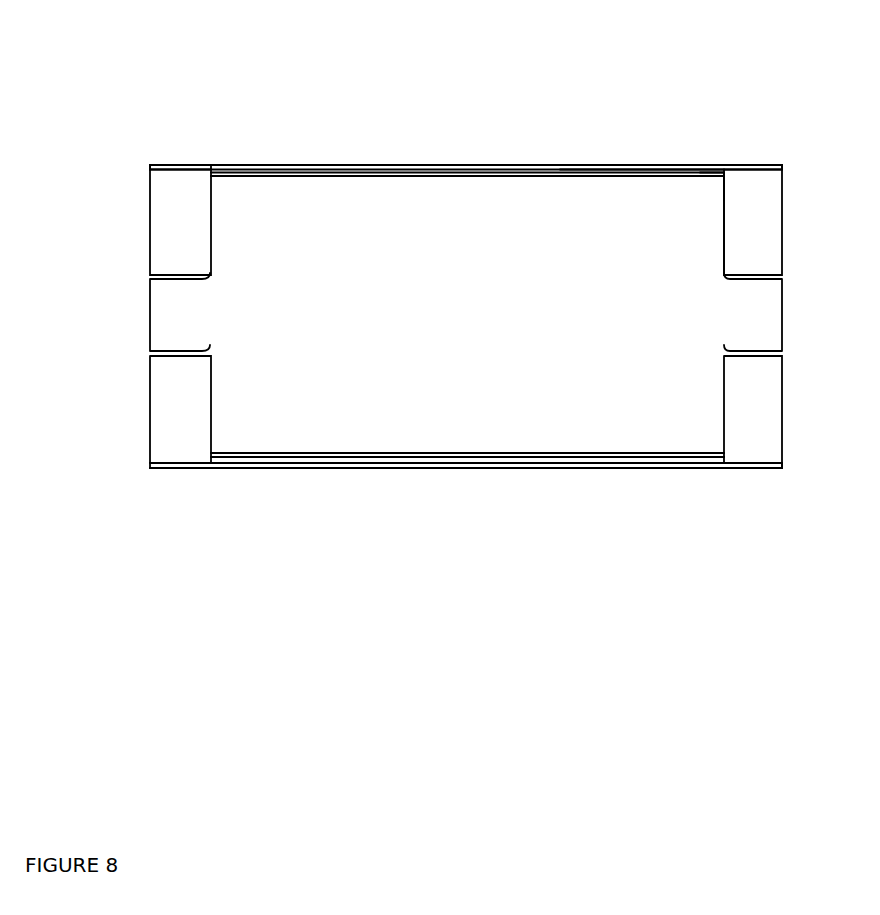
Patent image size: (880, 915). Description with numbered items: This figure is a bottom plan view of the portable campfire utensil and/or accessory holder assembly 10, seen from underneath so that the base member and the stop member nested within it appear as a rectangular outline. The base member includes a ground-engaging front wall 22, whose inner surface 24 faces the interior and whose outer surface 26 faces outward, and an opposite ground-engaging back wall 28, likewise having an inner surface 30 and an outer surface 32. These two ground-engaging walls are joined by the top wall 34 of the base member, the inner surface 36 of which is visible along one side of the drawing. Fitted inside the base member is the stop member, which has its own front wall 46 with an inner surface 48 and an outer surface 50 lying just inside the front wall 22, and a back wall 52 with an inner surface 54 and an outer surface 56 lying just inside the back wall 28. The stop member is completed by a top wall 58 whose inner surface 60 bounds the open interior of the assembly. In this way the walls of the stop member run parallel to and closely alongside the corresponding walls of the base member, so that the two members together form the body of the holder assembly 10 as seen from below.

The campfire utensil and/or accessory holder assembly 10 is at (483, 276).
The ground-engaging front wall 22 is at (255, 153).
The inner surface 24 is at (158, 171).
The outer surface 26 is at (178, 165).
The ground-engaging back wall 28 is at (263, 448).
The inner surface 30 is at (160, 463).
The outer surface 32 is at (188, 470).
The top wall 34 is at (784, 258).
The inner surface 36 is at (767, 250).
The front wall 46 is at (554, 152).
The inner surface 48 is at (526, 177).
The outer surface 50 is at (592, 163).
The back wall 52 is at (607, 438).
The inner surface 54 is at (655, 452).
The outer surface 56 is at (640, 463).
The top wall 58 is at (722, 196).
The inner surface 60 is at (703, 260).